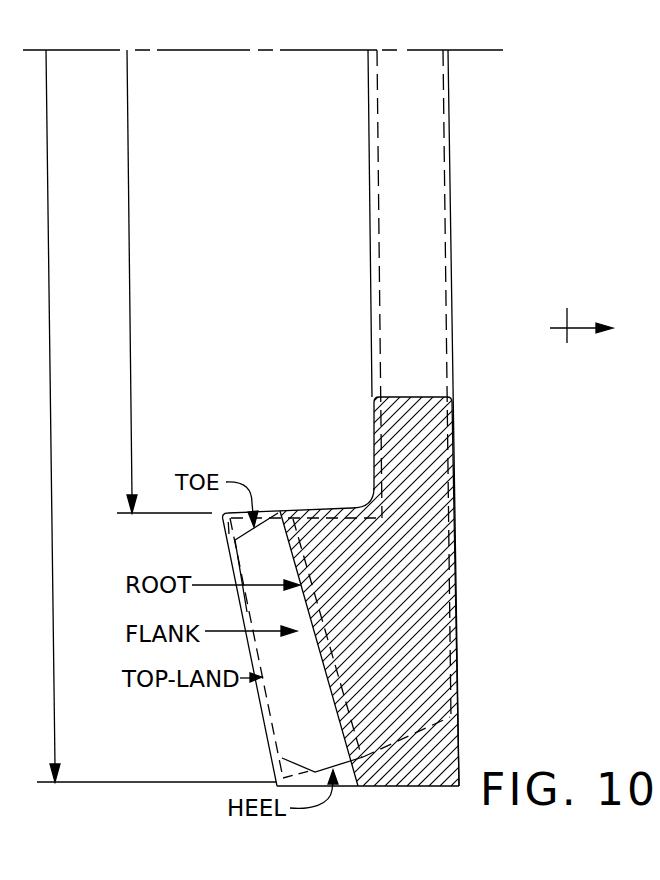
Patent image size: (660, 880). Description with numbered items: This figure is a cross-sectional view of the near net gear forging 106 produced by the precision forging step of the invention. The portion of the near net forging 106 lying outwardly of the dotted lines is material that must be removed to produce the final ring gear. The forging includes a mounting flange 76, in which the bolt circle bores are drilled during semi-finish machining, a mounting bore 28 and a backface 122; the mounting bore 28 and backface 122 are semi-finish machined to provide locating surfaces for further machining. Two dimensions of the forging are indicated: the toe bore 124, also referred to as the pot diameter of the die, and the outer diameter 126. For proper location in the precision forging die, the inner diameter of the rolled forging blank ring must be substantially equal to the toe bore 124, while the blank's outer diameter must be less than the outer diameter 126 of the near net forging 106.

The outer diameter 126 is at (48, 212).
The toe bore 124 is at (129, 212).
The mounting bore 28 is at (403, 397).
The mounting flange 76 is at (418, 442).
The near net gear forging 106 is at (338, 460).
The backface 122 is at (458, 530).